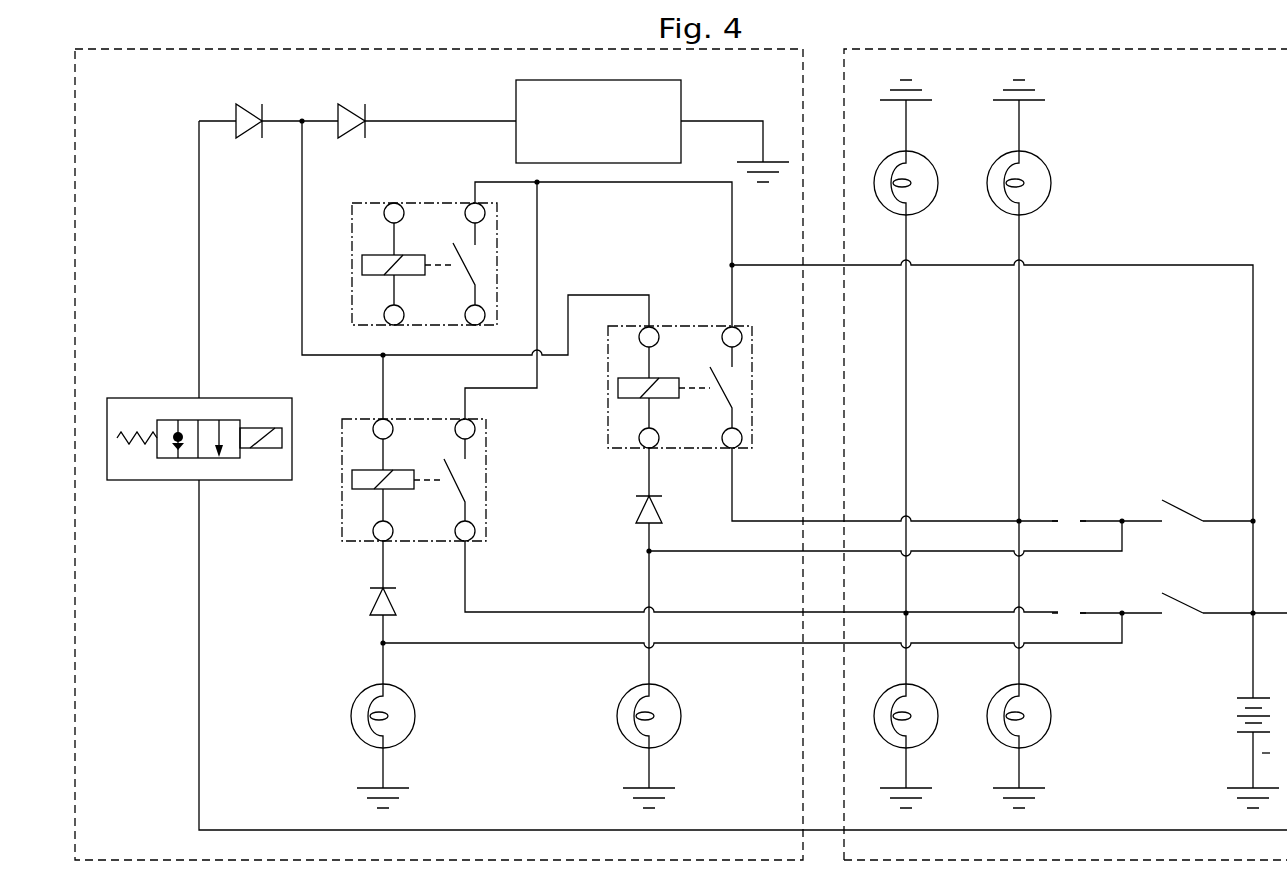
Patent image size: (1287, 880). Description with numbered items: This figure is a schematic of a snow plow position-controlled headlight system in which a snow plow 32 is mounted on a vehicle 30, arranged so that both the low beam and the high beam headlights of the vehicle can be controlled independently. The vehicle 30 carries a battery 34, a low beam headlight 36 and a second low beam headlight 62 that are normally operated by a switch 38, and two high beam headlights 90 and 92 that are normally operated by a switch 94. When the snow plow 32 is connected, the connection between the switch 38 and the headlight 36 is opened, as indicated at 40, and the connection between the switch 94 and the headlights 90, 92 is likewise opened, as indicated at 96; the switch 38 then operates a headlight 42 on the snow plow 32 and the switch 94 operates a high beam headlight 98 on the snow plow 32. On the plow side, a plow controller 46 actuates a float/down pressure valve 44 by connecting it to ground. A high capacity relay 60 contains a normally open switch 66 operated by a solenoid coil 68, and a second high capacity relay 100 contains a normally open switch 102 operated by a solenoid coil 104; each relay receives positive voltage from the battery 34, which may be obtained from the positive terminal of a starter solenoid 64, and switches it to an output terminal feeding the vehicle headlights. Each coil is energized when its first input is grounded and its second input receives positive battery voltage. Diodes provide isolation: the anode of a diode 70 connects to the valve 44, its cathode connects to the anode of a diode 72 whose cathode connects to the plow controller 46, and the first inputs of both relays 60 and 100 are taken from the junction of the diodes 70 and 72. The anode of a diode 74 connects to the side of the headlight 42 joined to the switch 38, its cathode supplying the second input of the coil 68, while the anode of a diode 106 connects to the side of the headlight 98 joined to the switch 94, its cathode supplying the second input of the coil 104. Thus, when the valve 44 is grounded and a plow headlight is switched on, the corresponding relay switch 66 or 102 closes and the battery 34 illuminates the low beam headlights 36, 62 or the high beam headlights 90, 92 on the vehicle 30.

The vehicle 30 is at (1093, 49).
The snow plow 32 is at (396, 49).
The battery 34 is at (1237, 716).
The headlight 36 is at (938, 716).
The switch 38 is at (1182, 599).
The opened electrical connection 40 is at (1069, 611).
The headlight 42 is at (415, 716).
The float/down pressure valve 44 is at (218, 398).
The plow controller 46 is at (681, 100).
The high capacity relay 60 is at (410, 481).
The second headlight 62 is at (938, 183).
The starter solenoid 64 is at (497, 255).
The normally open switch 66 is at (465, 489).
The solenoid coil 68 is at (362, 470).
The diode 70 is at (250, 104).
The diode 72 is at (352, 104).
The diode 74 is at (368, 607).
The headlight 90 is at (1051, 716).
The headlight 92 is at (1051, 183).
The switch 94 is at (1182, 507).
The opened electrical connection 96 is at (1069, 519).
The high beam headlight 98 is at (681, 716).
The second high capacity relay 100 is at (678, 389).
The normally open switch 102 is at (732, 396).
The solenoid coil 104 is at (628, 398).
The diode 106 is at (635, 512).